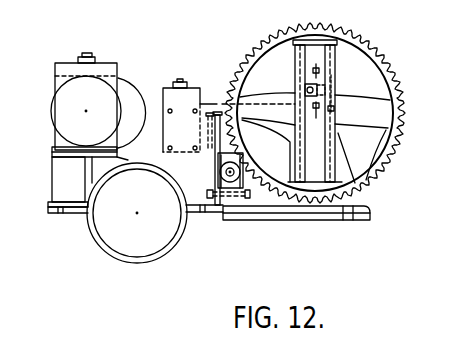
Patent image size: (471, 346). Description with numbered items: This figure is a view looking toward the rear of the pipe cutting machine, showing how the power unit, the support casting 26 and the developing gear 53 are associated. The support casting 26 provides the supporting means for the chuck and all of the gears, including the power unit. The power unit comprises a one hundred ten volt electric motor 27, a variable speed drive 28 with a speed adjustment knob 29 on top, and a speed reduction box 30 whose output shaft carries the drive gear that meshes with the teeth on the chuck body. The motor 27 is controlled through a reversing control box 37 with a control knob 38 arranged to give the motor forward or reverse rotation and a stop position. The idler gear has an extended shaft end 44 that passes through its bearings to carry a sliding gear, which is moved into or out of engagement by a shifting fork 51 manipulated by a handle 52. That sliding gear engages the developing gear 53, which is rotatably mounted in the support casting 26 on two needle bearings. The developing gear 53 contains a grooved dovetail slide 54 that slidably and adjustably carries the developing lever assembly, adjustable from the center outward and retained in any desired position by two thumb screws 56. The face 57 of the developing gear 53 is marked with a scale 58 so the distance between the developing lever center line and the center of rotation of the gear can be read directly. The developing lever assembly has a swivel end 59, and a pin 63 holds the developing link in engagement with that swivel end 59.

The support casting 26 is at (95, 243).
The electric motor 27 is at (59, 110).
The variable speed drive 28 is at (56, 77).
The speed adjustment knob 29 is at (88, 53).
The speed reduction box 30 is at (153, 84).
The reversing control box 37 is at (195, 100).
The control knob 38 is at (182, 80).
The extended shaft end 44 is at (230, 175).
The shifting fork 51 is at (208, 143).
The handle 52 is at (209, 117).
The developing gear 53 is at (247, 60).
The grooved dovetail slide 54 is at (314, 68).
The thumb screws 56 is at (335, 72).
The face of developing gear 57 is at (334, 76).
The scale 58 is at (335, 108).
The swivel end 59 is at (312, 86).
The pin 63 is at (307, 90).